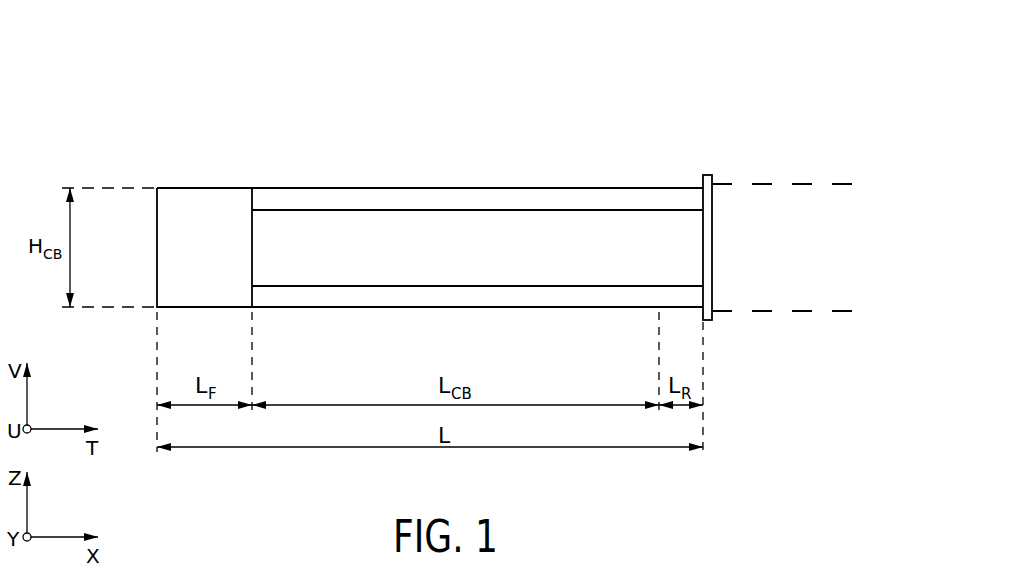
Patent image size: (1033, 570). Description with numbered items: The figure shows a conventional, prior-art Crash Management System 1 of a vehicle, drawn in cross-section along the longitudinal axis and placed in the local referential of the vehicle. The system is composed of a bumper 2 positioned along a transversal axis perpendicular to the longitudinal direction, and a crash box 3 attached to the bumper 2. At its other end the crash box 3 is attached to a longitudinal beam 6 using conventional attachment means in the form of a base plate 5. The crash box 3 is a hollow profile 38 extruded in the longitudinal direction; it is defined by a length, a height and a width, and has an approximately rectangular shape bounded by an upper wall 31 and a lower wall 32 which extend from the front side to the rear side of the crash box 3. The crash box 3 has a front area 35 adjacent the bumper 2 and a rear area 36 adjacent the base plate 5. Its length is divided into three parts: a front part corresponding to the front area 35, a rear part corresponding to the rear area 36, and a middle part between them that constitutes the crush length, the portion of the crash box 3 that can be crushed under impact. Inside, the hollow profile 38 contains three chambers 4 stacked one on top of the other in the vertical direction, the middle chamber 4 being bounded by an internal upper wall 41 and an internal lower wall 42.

The Crash Management System 1 is at (698, 115).
The bumper 2 is at (165, 196).
The crash box 3 is at (477, 236).
The chambers 4 is at (477, 242).
The base plate 5 is at (652, 173).
The longitudinal beam 6 is at (808, 180).
The upper wall 31 is at (397, 187).
The lower wall 32 is at (386, 308).
The front area 35 is at (200, 180).
The rear area 36 is at (600, 170).
The hollow profile 38 is at (299, 185).
The internal upper wall 41 is at (448, 210).
The internal lower wall 42 is at (557, 286).